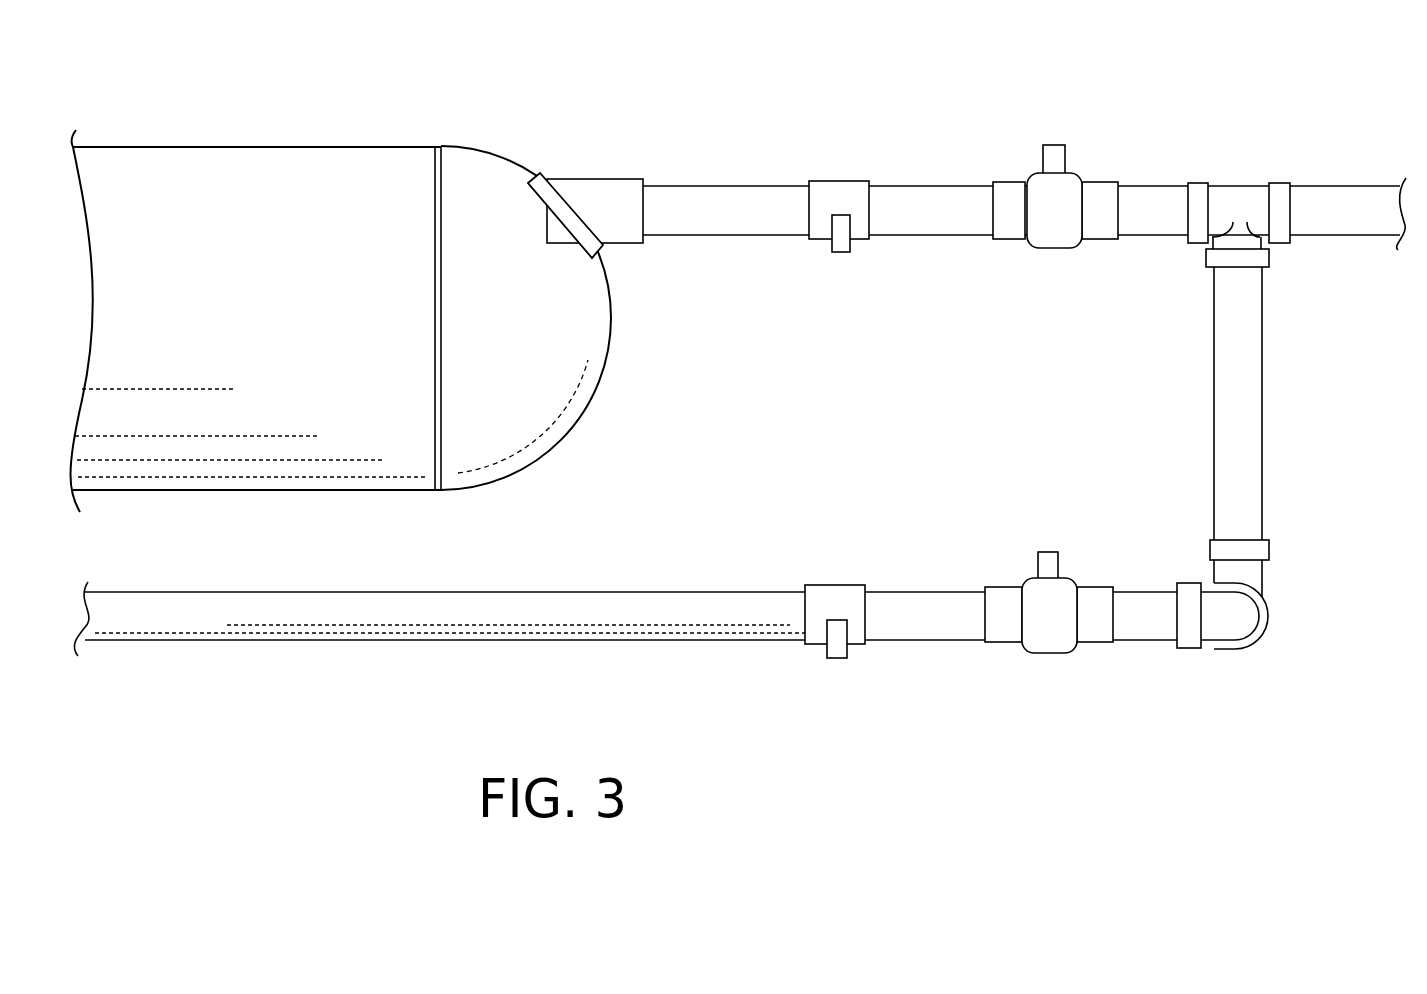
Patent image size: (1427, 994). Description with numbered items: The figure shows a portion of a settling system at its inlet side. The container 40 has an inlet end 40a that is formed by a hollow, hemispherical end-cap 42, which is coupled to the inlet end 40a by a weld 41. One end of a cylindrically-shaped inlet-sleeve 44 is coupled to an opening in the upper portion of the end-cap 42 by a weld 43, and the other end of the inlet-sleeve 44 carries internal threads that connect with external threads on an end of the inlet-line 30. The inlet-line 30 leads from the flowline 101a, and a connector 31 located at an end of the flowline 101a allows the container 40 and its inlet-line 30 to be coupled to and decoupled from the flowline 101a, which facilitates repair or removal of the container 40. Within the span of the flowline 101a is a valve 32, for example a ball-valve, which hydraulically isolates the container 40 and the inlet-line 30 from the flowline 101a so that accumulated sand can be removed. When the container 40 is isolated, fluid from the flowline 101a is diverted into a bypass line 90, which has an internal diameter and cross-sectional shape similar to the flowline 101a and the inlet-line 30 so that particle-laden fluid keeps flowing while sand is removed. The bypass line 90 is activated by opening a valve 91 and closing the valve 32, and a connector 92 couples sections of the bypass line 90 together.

The inlet-line 30 is at (725, 186).
The connector 31 is at (842, 252).
The valve 32 is at (1052, 248).
The container 40 is at (200, 147).
The inlet end 40a is at (371, 147).
The weld 41 is at (440, 147).
The end-cap 42 is at (482, 152).
The weld 43 is at (583, 200).
The inlet-sleeve 44 is at (625, 178).
The bypass line 90 is at (1213, 347).
The valve 91 is at (1048, 653).
The connector 92 is at (836, 658).
The flowline 101a is at (1348, 187).